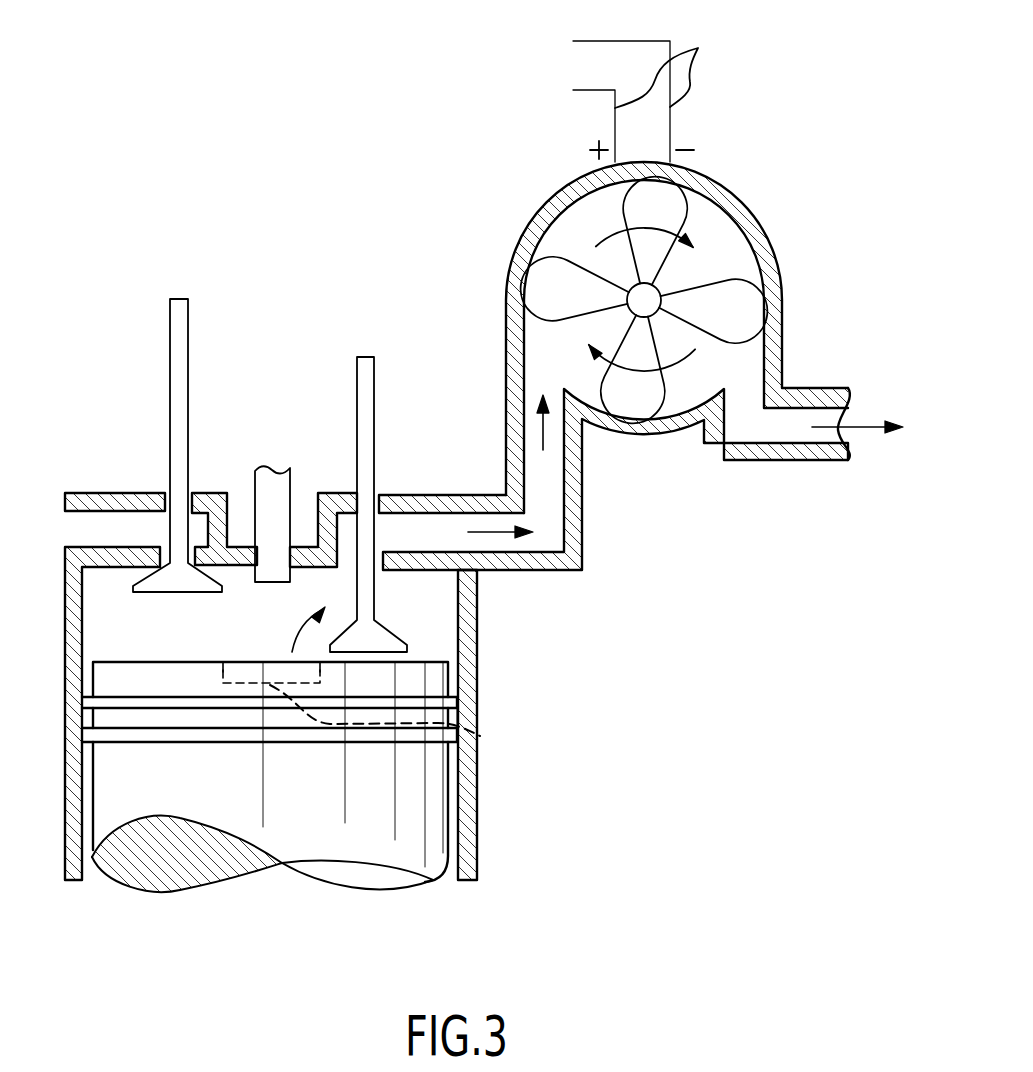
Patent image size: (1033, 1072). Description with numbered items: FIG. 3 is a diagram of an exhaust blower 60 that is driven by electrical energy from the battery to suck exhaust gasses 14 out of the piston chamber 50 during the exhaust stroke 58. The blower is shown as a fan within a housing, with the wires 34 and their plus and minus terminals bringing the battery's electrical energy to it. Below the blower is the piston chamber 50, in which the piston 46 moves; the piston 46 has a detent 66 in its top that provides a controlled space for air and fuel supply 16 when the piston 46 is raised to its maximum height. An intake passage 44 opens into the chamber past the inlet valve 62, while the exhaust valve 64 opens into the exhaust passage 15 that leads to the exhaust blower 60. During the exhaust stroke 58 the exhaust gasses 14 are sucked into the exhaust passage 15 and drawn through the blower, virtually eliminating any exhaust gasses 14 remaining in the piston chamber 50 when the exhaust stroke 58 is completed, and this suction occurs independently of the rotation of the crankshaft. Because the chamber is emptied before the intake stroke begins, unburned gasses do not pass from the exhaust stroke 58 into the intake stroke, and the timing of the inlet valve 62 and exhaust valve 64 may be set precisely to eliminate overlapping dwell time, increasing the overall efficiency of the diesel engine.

The exhaust gasses 14 is at (544, 438).
The exhaust passage 15 is at (582, 540).
The fuel supply 16 is at (262, 470).
The wires 34 is at (652, 88).
The intake passage 44 is at (88, 500).
The piston 46 is at (402, 868).
The piston chamber 50 is at (427, 594).
The exhaust stroke 58 is at (502, 822).
The exhaust blower 60 is at (560, 190).
The inlet valve 62 is at (170, 312).
The exhaust valve 64 is at (357, 355).
The detent 66 is at (477, 734).